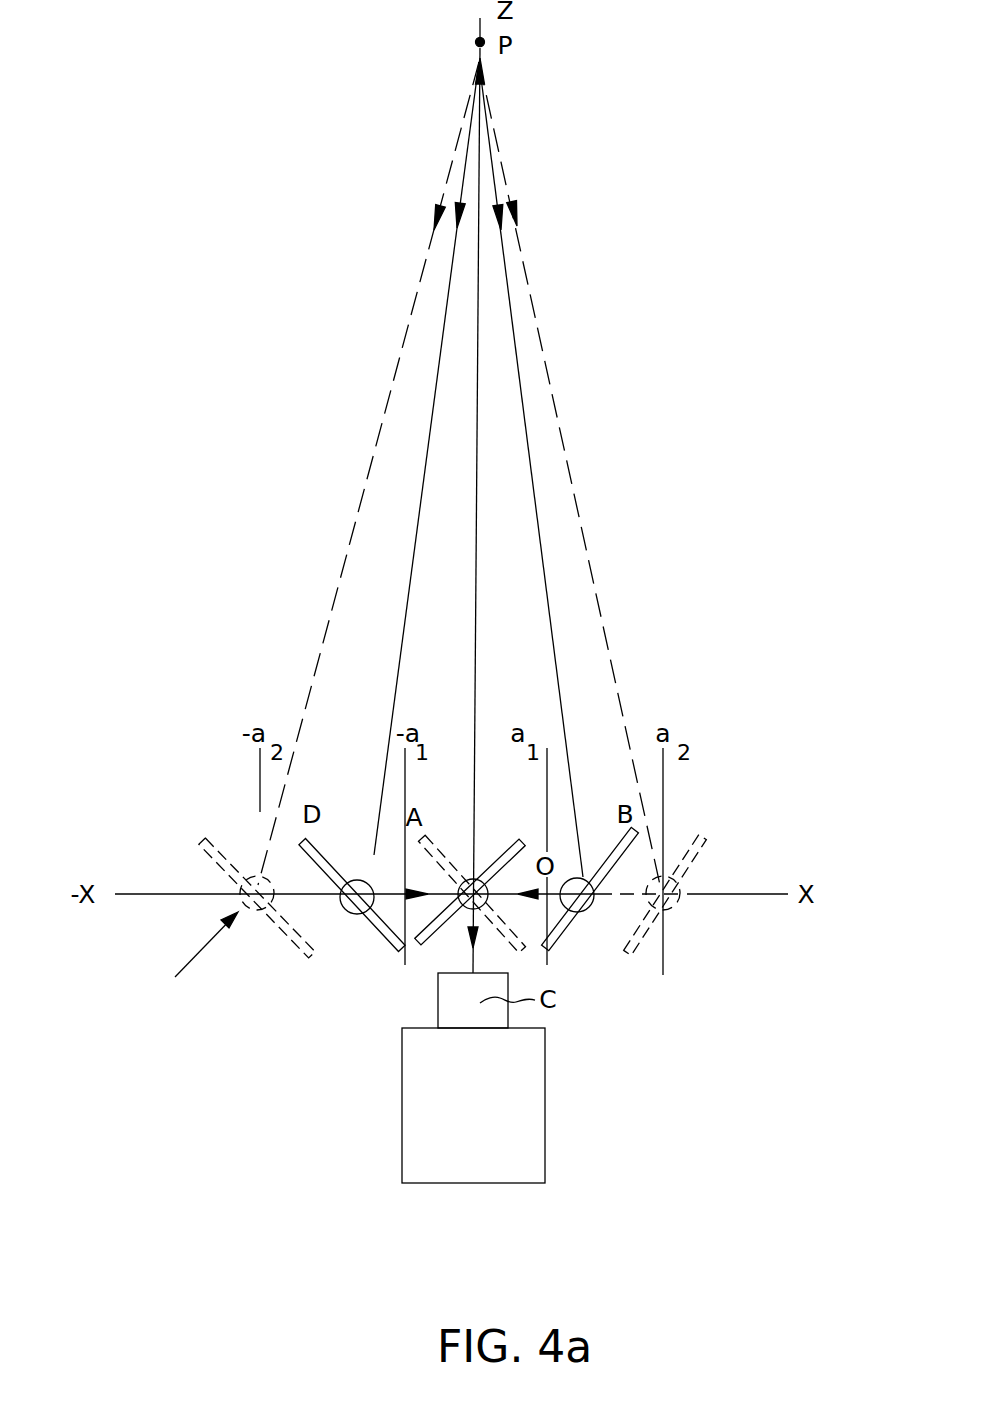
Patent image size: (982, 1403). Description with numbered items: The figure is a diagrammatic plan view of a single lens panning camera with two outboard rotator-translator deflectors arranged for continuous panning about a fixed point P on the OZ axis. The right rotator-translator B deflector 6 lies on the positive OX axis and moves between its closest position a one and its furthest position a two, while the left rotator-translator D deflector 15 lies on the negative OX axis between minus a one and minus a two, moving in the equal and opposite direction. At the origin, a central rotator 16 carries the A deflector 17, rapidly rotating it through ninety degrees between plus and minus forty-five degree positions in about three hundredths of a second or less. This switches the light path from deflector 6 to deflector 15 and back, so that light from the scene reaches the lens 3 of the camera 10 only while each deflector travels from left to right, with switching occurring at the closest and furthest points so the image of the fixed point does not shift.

The lens 3 is at (462, 1022).
The right rotator-translator B deflector 6 is at (570, 931).
The camera 10 is at (450, 1122).
The left rotator-translator D deflector 15 is at (385, 938).
The central rotator 16 is at (478, 867).
The A deflector 17 is at (517, 942).